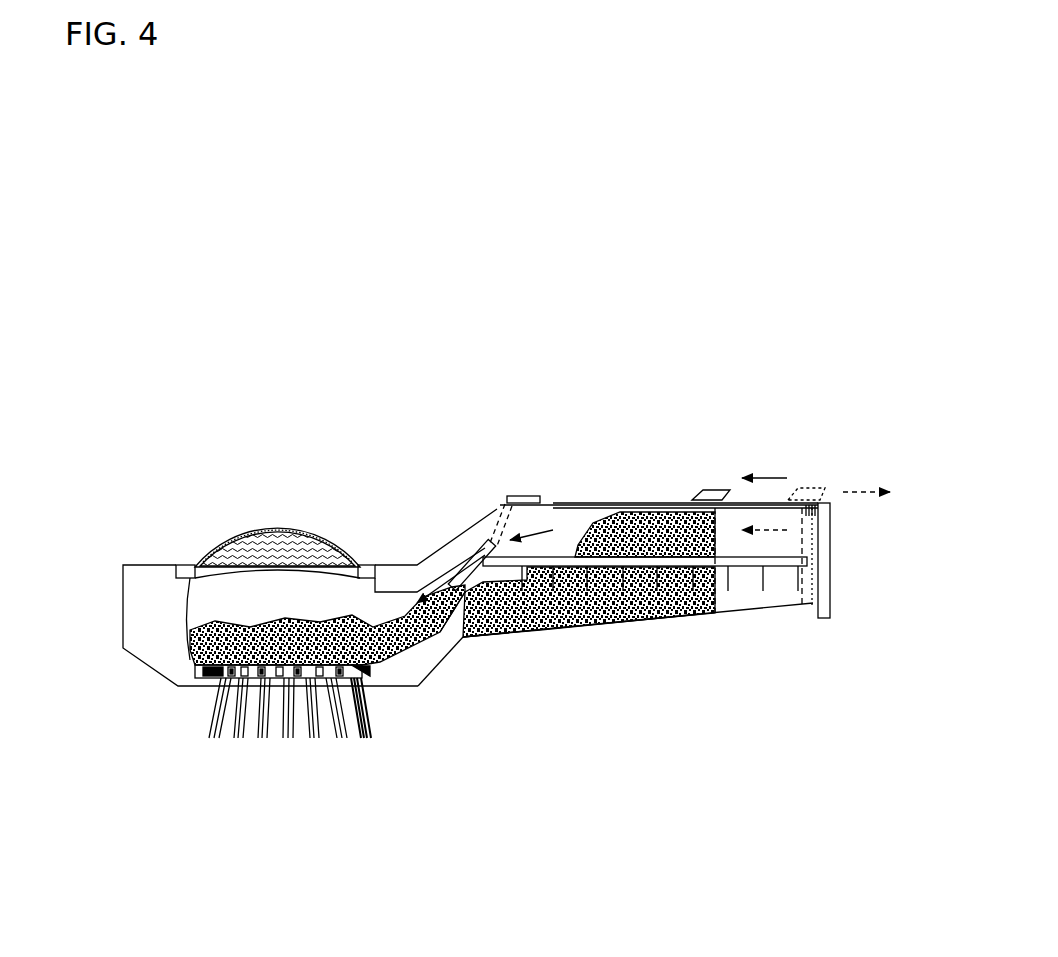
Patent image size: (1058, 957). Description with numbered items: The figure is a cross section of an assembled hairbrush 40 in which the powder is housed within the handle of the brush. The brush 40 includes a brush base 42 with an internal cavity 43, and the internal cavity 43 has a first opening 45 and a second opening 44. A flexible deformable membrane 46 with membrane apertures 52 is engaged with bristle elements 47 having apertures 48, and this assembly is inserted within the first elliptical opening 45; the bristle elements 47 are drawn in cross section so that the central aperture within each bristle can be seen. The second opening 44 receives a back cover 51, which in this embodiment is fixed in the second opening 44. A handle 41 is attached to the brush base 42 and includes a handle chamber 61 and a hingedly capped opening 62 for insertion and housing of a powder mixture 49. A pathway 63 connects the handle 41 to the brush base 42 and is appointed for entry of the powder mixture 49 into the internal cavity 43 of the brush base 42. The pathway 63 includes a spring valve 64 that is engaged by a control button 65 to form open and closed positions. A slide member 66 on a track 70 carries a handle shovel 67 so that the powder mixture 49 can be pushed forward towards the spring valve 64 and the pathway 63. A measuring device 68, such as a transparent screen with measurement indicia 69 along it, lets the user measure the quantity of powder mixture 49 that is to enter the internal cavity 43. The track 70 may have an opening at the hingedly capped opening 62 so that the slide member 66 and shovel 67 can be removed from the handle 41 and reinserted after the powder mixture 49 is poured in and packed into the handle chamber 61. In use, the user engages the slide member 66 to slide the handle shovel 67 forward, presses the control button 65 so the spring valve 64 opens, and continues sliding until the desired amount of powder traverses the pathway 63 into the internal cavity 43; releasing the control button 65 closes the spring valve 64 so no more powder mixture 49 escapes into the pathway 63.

The hairbrush 40 is at (485, 250).
The handle 41 is at (713, 612).
The brush base 42 is at (145, 580).
The internal cavity 43 is at (378, 588).
The second opening 44 is at (190, 565).
The first opening 45 is at (200, 685).
The flexible deformable membrane 46 is at (200, 670).
The bristle elements 47 is at (232, 728).
The apertures 48 is at (287, 737).
The powder mixture 49 is at (205, 643).
The back cover 51 is at (263, 540).
The membrane apertures 52 is at (363, 668).
The handle chamber 61 is at (542, 628).
The hingedly capped opening 62 is at (832, 550).
The pathway 63 is at (468, 642).
The spring valve 64 is at (484, 535).
The control button 65 is at (528, 494).
The slide member 66 is at (723, 490).
The handle shovel 67 is at (705, 547).
The measuring device 68 is at (613, 627).
The measurement indicia 69 is at (670, 623).
The track 70 is at (598, 501).